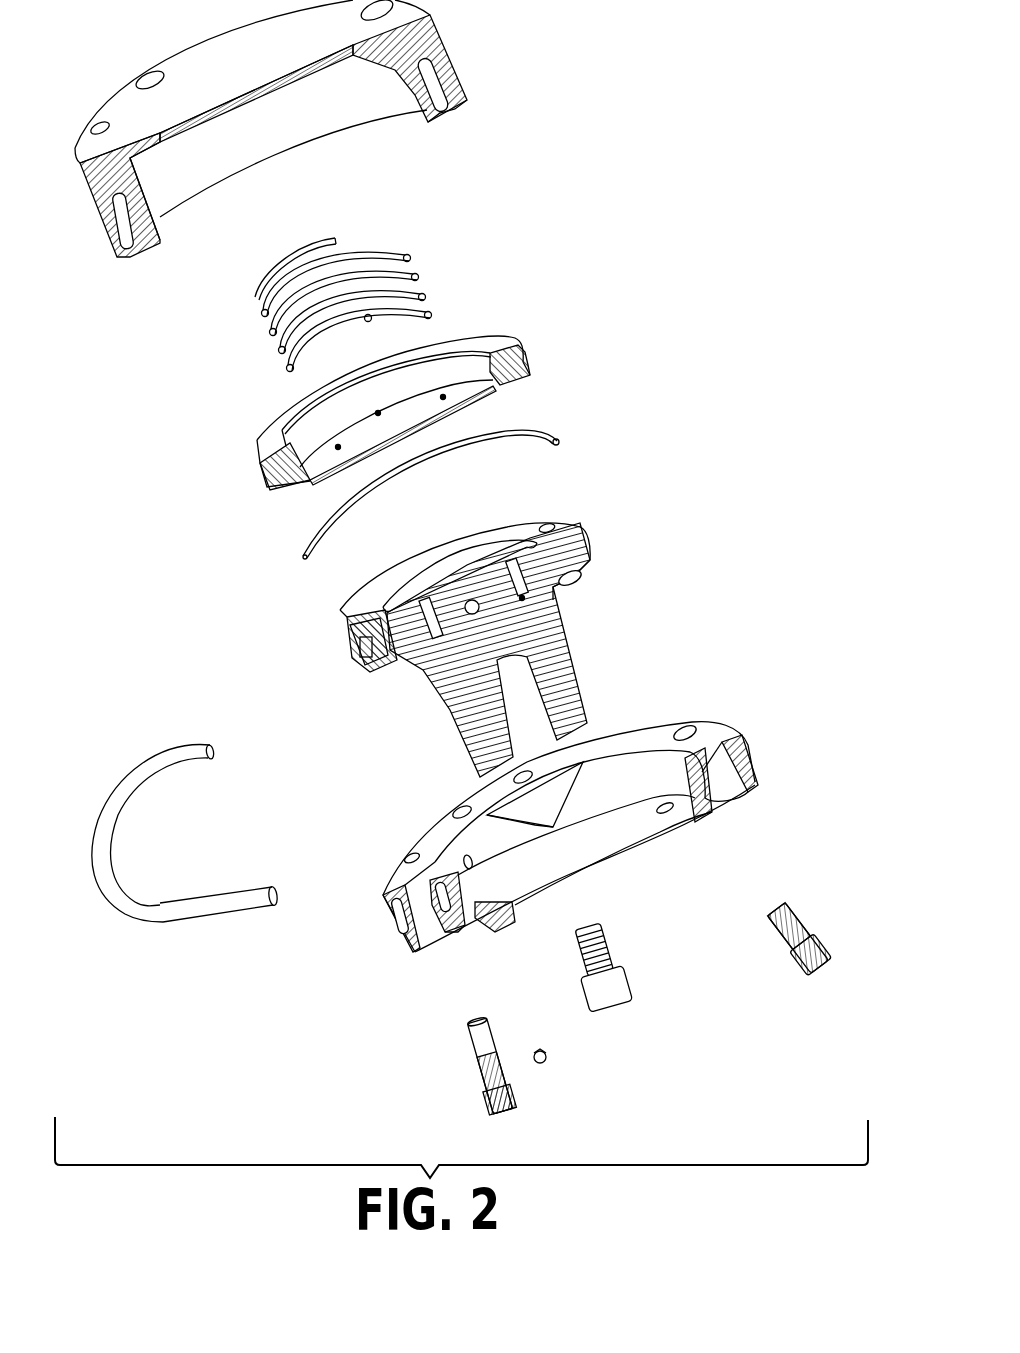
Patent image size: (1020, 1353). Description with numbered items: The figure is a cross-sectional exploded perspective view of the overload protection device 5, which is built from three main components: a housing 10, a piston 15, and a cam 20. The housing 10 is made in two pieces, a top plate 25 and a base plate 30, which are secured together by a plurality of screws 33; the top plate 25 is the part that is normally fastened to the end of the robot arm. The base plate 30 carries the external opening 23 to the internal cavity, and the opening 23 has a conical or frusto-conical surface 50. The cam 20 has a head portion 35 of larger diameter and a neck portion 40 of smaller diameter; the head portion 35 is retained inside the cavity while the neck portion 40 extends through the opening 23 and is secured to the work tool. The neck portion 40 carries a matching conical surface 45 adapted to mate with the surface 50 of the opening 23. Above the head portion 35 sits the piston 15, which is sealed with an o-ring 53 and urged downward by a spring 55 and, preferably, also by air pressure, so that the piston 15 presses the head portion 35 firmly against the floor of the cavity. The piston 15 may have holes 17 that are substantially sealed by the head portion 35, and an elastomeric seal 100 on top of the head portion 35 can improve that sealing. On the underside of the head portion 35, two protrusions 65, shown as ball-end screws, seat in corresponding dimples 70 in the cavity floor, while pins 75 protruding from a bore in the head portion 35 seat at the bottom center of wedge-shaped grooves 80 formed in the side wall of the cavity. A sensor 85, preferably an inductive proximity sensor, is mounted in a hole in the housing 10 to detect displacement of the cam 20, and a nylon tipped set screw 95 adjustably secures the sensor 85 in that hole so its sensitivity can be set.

The overload protection device 5 is at (672, 85).
The housing 10 is at (450, 359).
The top plate 25 is at (445, 40).
The spring 55 is at (392, 252).
The piston 15 is at (381, 381).
The holes 17 is at (381, 413).
The o-ring 53 is at (300, 556).
The cam 20 is at (484, 614).
The neck portion 40 is at (577, 670).
The conical surface 45 is at (567, 608).
The head portion 35 is at (365, 607).
The seal 100 is at (502, 543).
The pins 75 is at (472, 600).
The protrusions 65 is at (580, 582).
The base plate 30 is at (586, 850).
The dimples 70 is at (684, 822).
The wedge-shaped grooves 80 is at (477, 790).
The conical surface 50 is at (633, 830).
The external opening 23 is at (571, 862).
The sensor 85 is at (200, 925).
The screws 33 is at (785, 973).
The set screw 95 is at (537, 1049).